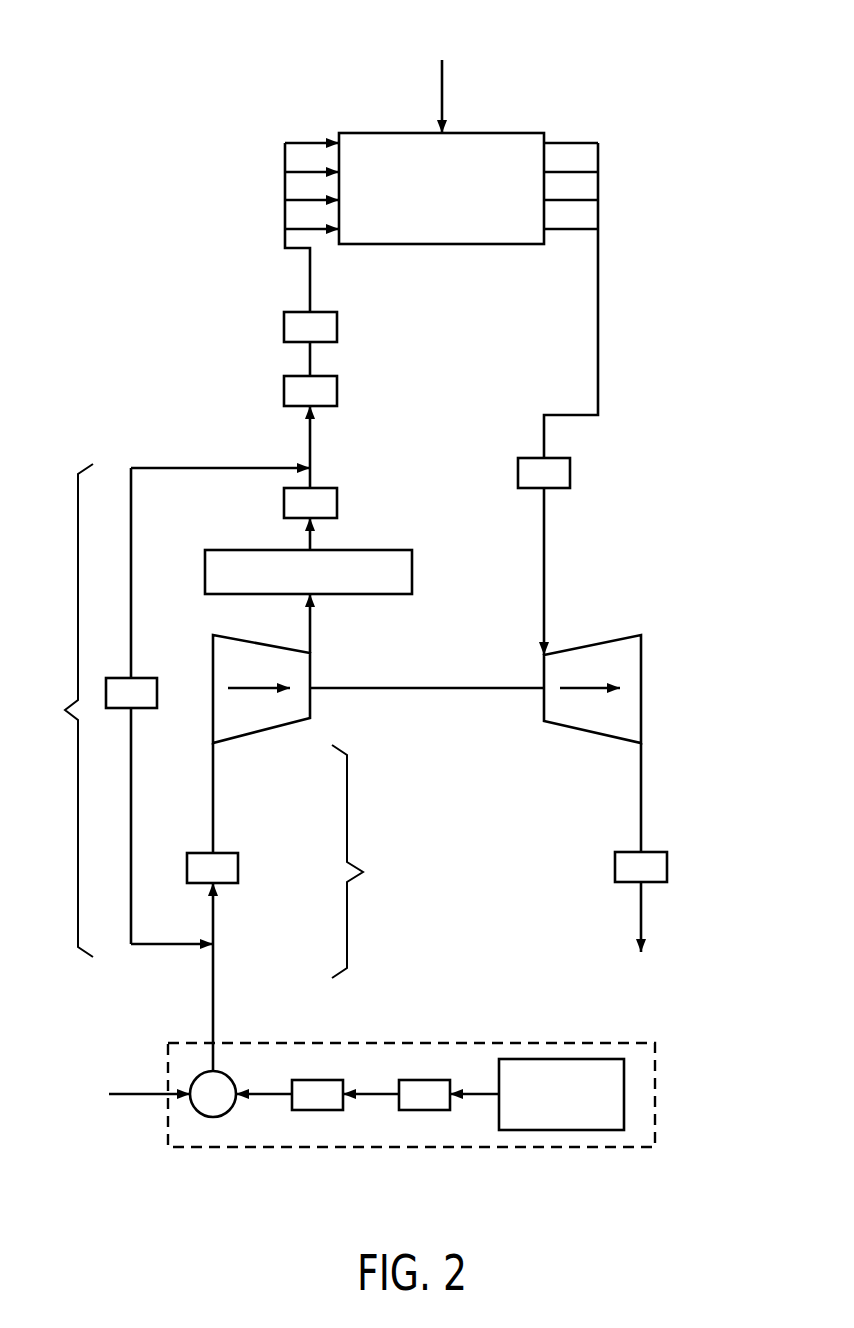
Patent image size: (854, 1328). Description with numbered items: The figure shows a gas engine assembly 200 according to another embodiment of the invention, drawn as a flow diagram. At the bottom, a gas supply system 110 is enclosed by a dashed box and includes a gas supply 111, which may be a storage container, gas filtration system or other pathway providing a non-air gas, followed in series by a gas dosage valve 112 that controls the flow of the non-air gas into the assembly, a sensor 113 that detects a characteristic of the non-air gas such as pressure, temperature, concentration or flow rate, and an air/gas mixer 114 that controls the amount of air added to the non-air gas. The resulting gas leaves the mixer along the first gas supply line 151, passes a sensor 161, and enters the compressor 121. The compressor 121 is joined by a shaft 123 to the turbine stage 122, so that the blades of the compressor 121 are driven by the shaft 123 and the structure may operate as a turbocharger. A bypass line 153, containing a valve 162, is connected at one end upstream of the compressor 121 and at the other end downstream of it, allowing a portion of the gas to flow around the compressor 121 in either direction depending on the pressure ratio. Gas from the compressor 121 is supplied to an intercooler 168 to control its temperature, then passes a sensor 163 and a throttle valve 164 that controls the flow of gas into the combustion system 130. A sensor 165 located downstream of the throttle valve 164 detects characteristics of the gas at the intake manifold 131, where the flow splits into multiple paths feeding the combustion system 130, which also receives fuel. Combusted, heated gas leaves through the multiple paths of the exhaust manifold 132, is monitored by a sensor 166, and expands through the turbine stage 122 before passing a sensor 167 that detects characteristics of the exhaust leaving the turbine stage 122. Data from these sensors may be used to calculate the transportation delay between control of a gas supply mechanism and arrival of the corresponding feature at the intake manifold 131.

The gas engine assembly 200 is at (212, 225).
The combustion system 130 is at (390, 133).
The intake manifold 131 is at (309, 140).
The exhaust manifold 132 is at (576, 141).
The sensor 165 is at (284, 324).
The throttle valve 164 is at (284, 388).
The sensor 163 is at (337, 502).
The intercooler 168 is at (412, 574).
The sensor 166 is at (570, 470).
The valve 162 is at (157, 693).
The compressor 121 is at (312, 704).
The turbine stage 122 is at (544, 705).
The shaft 123 is at (428, 688).
The sensor 167 is at (667, 870).
The sensor 161 is at (225, 853).
The first gas supply line 151 is at (369, 861).
The bypass line 153 is at (56, 710).
The gas supply system 110 is at (655, 1095).
The air/gas mixer 114 is at (213, 1117).
The sensor 113 is at (318, 1110).
The gas dosage valve 112 is at (425, 1110).
The gas supply 111 is at (563, 1130).